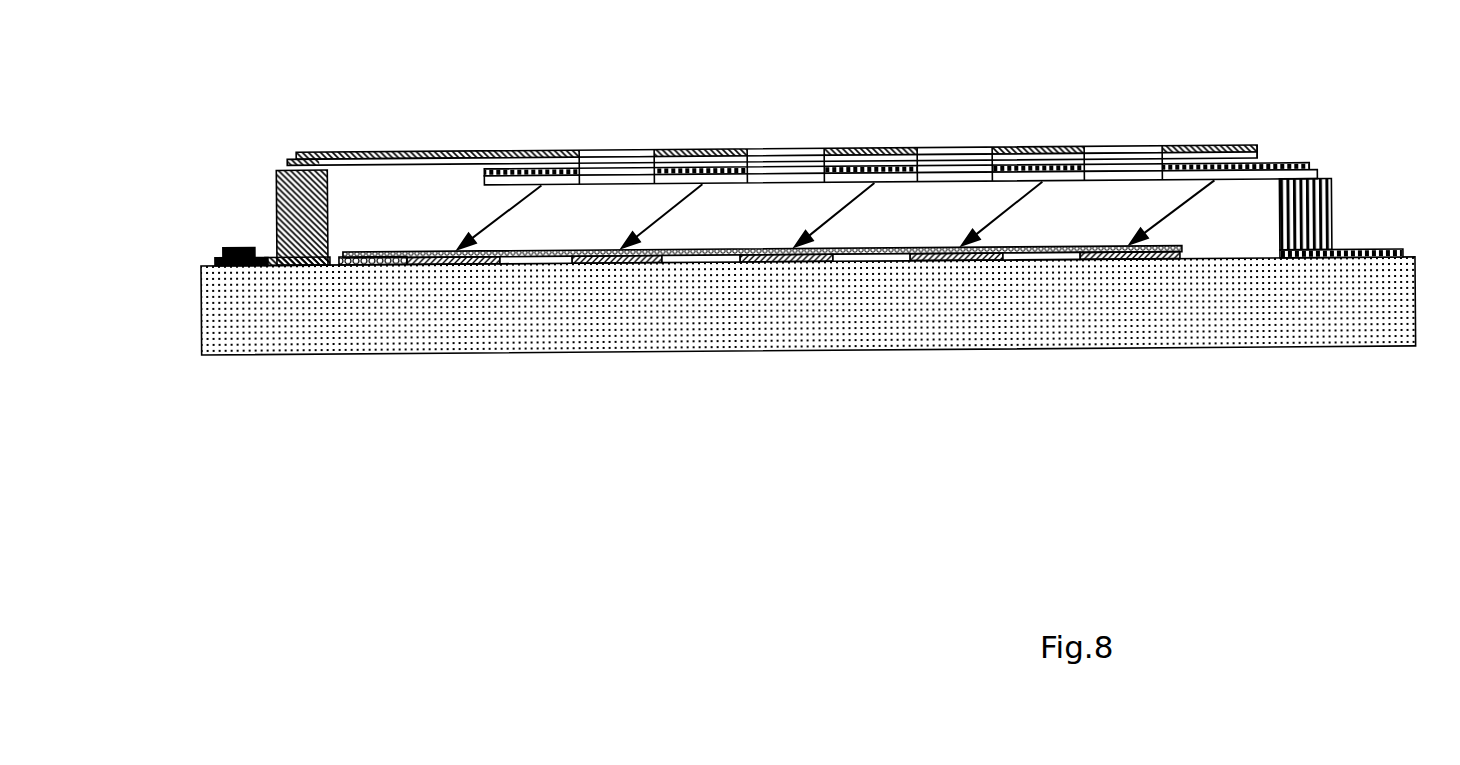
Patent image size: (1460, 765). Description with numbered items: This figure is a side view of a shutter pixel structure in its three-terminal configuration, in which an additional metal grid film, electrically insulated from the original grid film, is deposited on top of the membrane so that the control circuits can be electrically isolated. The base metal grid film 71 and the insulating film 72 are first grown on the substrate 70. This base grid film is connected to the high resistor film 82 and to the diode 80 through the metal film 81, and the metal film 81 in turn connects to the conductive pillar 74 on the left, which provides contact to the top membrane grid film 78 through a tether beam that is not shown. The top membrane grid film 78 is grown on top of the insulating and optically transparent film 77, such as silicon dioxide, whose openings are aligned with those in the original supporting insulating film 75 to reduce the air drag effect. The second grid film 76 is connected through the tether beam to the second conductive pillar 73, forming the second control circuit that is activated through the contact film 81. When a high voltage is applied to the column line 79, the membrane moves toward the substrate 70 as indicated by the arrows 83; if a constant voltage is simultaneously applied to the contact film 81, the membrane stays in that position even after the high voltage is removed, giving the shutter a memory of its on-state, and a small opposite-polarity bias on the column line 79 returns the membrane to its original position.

The substrate 70 is at (785, 321).
The base metal grid film 71 is at (603, 263).
The insulating film 72 is at (1038, 262).
The second conductive pillar 73 is at (1308, 220).
The conductive pillar 74 is at (283, 191).
The supporting insulating film 75 is at (1078, 190).
The second grid film 76 is at (1265, 168).
The insulating and optically transparent film 77 is at (447, 169).
The top membrane grid film 78 is at (557, 158).
The column line 79 is at (240, 248).
The diode 80 is at (218, 263).
The metal film 81 is at (297, 264).
The high resistor film 82 is at (372, 264).
The arrows 83 is at (761, 223).